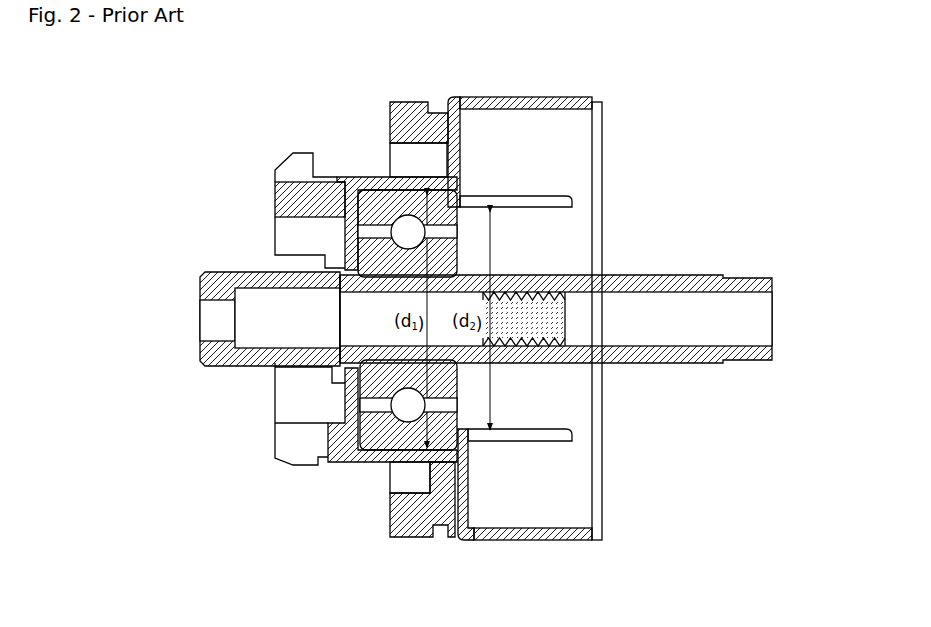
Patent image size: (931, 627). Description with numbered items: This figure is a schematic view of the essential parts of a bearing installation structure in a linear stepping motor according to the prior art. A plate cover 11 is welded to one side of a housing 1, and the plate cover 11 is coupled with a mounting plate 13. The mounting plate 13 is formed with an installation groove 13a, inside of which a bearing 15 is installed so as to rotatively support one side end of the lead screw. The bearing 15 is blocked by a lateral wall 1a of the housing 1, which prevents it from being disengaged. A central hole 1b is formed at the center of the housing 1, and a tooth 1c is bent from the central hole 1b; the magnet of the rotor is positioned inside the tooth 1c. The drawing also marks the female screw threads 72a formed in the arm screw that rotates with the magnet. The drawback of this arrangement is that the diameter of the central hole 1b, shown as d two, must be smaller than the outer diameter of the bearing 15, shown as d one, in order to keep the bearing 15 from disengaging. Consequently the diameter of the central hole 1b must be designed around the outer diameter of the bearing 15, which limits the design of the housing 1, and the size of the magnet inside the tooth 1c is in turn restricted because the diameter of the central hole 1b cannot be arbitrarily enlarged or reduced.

The housing 1 is at (523, 103).
The lateral wall 1a is at (463, 506).
The central hole 1b is at (505, 212).
The tooth 1c is at (550, 201).
The plate cover 11 is at (442, 108).
The mounting plate 13 is at (317, 198).
The installation groove 13a is at (388, 198).
The bearing 15 is at (375, 435).
The female screw threads 72a is at (537, 302).